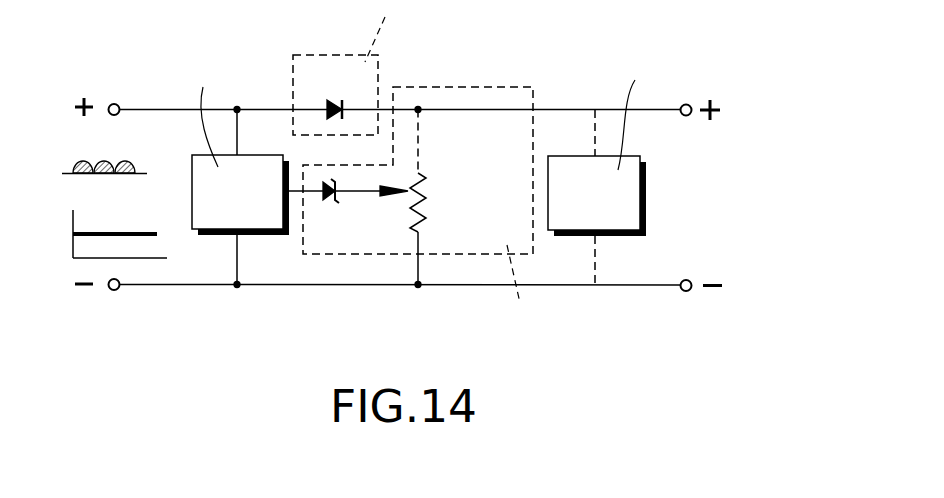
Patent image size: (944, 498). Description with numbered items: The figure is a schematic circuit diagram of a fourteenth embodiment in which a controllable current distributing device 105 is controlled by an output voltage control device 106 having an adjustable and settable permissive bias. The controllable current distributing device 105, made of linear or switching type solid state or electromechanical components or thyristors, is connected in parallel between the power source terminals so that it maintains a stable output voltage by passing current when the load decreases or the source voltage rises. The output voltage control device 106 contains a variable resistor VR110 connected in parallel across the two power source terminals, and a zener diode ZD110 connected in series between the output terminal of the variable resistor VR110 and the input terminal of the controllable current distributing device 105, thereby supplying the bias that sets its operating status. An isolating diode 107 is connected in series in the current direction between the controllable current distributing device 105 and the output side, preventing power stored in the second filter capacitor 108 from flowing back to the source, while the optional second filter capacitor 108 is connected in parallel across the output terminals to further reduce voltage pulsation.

The controllable current distributing device 105 is at (169, 157).
The isolating diode 107 is at (384, 67).
The output voltage control device 106 is at (453, 83).
The second filter capacitor 108 is at (635, 166).
The zener diode ZD110 is at (345, 215).
The variable resistor VR110 is at (466, 197).